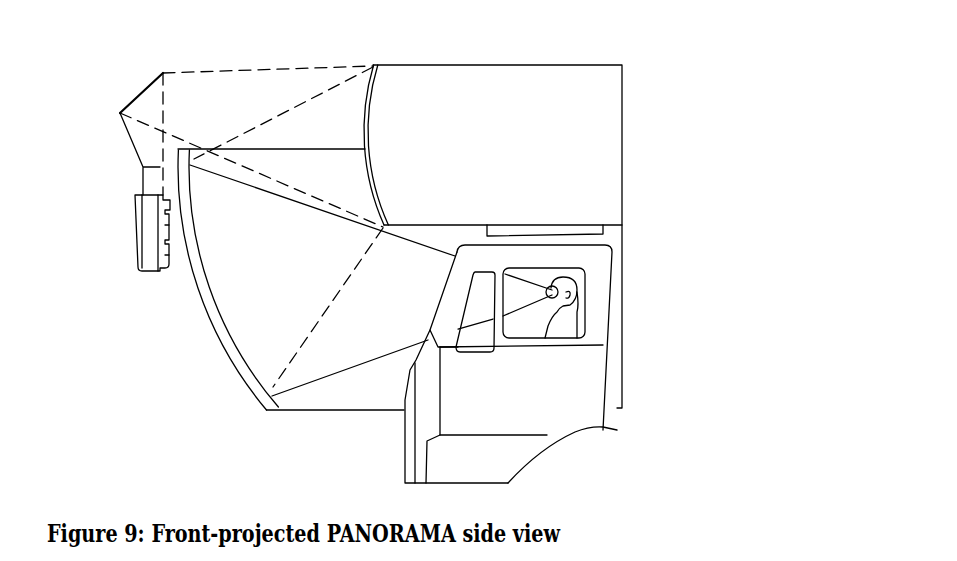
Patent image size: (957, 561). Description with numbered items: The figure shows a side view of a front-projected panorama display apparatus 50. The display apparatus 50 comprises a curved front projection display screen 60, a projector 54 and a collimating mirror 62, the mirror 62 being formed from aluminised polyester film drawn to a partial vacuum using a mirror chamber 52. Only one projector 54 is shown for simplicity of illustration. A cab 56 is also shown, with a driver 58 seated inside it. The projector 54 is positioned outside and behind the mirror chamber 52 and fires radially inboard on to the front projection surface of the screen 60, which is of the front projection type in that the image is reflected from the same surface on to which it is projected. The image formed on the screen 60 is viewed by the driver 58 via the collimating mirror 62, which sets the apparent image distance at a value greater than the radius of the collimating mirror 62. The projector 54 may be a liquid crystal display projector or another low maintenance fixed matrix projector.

The display apparatus 50 is at (448, 255).
The mirror chamber 52 is at (237, 368).
The projector 54 is at (135, 257).
The cab 56 is at (555, 443).
The driver 58 is at (575, 323).
The curved front projection display screen 60 is at (376, 97).
The collimating mirror 62 is at (214, 290).